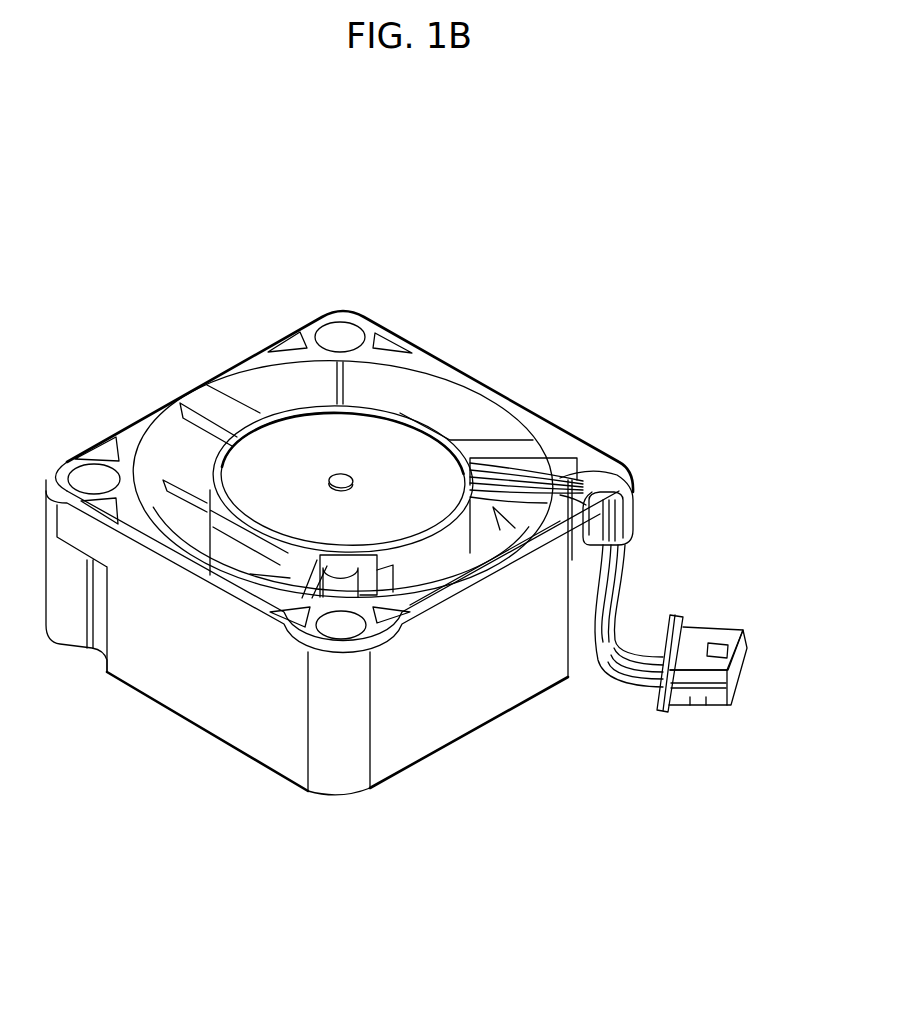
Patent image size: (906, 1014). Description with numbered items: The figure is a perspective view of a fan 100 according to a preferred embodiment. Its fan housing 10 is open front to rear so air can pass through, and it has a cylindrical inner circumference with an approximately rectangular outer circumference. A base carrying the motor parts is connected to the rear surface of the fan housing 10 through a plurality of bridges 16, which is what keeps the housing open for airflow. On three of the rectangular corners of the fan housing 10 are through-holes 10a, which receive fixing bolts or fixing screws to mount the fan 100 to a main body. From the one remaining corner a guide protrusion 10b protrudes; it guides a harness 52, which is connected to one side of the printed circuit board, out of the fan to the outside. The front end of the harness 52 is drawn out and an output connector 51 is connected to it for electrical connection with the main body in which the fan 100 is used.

The fan 100 is at (632, 250).
The fan housing 10 is at (459, 370).
The through-hole 10a is at (316, 622).
The guide protrusion 10b is at (600, 512).
The bridge 16 is at (500, 442).
The output connector 51 is at (712, 632).
The harness 52 is at (617, 613).